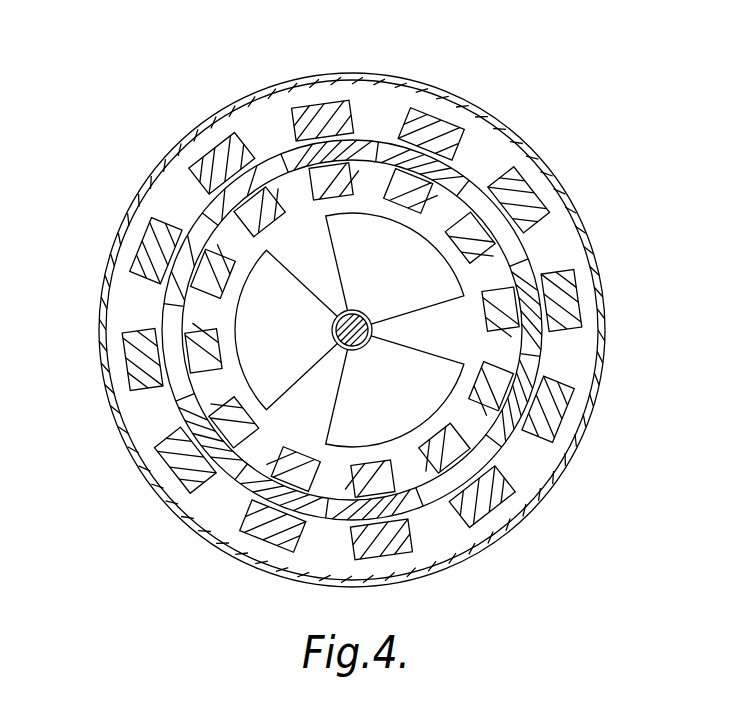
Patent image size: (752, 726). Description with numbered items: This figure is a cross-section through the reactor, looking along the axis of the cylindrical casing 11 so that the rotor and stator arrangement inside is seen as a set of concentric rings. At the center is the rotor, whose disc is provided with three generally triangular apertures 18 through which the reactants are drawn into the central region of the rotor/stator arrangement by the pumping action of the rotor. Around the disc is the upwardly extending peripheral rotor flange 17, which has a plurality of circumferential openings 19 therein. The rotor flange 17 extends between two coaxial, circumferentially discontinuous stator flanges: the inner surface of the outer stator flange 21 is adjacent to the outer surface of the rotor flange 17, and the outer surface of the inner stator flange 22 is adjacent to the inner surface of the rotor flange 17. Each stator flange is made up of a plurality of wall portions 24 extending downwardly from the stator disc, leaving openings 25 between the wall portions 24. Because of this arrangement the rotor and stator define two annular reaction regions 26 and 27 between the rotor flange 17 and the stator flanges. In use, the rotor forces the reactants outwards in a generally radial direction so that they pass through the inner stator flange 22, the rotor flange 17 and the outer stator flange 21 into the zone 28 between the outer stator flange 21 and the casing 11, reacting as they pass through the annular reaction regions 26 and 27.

The casing 11 is at (372, 330).
The rotor flange 17 is at (362, 410).
The apertures 18 is at (136, 427).
The circumferential openings 19 is at (585, 360).
The outer stator flange 21 is at (577, 416).
The inner stator flange 22 is at (547, 398).
The wall portions 24 is at (356, 347).
The openings 25 is at (327, 361).
The annular reaction region 26 is at (317, 276).
The annular reaction region 27 is at (363, 291).
The zone 28 is at (101, 360).